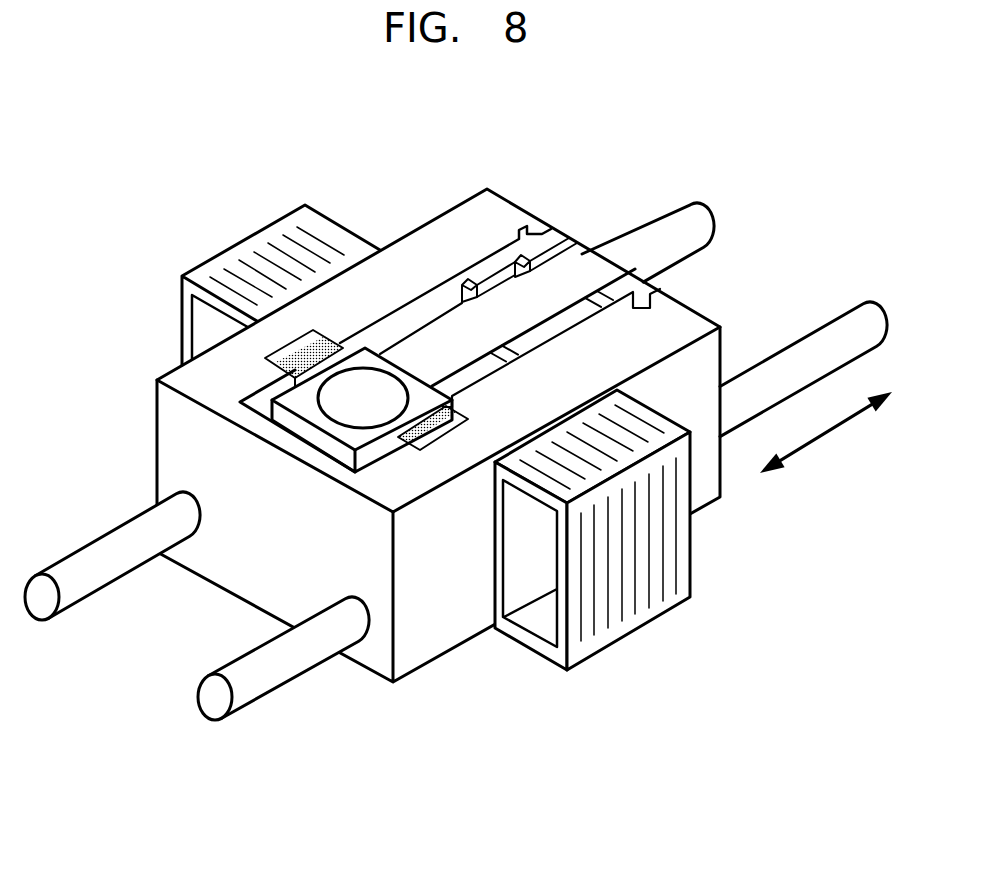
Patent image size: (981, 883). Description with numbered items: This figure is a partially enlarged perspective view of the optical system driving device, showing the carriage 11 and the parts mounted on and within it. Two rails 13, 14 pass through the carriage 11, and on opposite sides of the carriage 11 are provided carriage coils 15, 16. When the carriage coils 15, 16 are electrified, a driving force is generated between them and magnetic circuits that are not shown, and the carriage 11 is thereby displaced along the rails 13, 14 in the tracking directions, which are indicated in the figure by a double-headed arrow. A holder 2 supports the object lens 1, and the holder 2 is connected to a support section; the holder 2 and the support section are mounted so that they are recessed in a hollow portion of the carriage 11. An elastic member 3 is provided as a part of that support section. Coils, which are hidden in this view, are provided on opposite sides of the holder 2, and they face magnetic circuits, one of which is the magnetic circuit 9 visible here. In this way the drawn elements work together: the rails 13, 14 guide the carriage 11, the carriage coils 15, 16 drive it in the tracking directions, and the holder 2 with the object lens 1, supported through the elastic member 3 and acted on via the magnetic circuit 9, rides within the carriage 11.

The object lens 1 is at (341, 392).
The holder 2 is at (284, 409).
The elastic member 3 is at (451, 332).
The magnetic circuit 9 is at (424, 455).
The carriage 11 is at (431, 591).
The rail 13 is at (189, 730).
The rail 14 is at (98, 615).
The carriage coil 15 is at (655, 641).
The carriage coil 16 is at (256, 206).